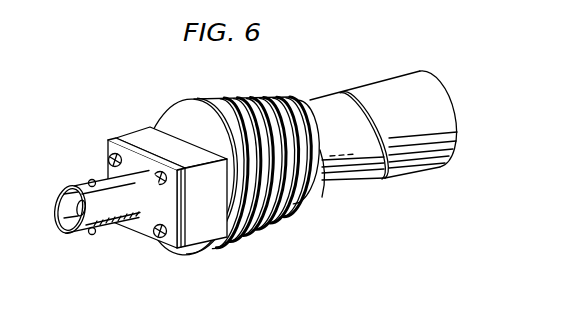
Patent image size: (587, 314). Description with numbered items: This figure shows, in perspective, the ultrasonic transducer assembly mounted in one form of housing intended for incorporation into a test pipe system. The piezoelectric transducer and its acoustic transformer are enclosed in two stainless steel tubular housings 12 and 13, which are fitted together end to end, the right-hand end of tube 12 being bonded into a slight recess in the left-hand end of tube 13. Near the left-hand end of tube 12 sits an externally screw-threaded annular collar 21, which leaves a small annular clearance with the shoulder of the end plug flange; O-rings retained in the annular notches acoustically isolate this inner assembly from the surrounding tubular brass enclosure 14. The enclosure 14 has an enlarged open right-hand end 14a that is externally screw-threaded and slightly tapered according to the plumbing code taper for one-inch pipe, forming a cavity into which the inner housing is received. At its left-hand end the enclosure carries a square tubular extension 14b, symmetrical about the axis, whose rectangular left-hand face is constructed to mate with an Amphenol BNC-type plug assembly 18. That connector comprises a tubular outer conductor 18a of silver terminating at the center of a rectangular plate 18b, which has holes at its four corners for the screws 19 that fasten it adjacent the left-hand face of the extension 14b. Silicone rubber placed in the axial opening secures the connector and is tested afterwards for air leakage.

The tubular housing 12 is at (327, 107).
The tubular housing 13 is at (407, 82).
The tubular enclosure 14 is at (212, 98).
The enlarged open right-hand end 14a is at (282, 229).
The square tubular extension 14b is at (205, 228).
The plug assembly 18 is at (116, 234).
The tubular outer conductor 18a is at (90, 180).
The rectangular plate 18b is at (108, 142).
The screws 19 is at (160, 174).
The annular collar 21 is at (303, 108).